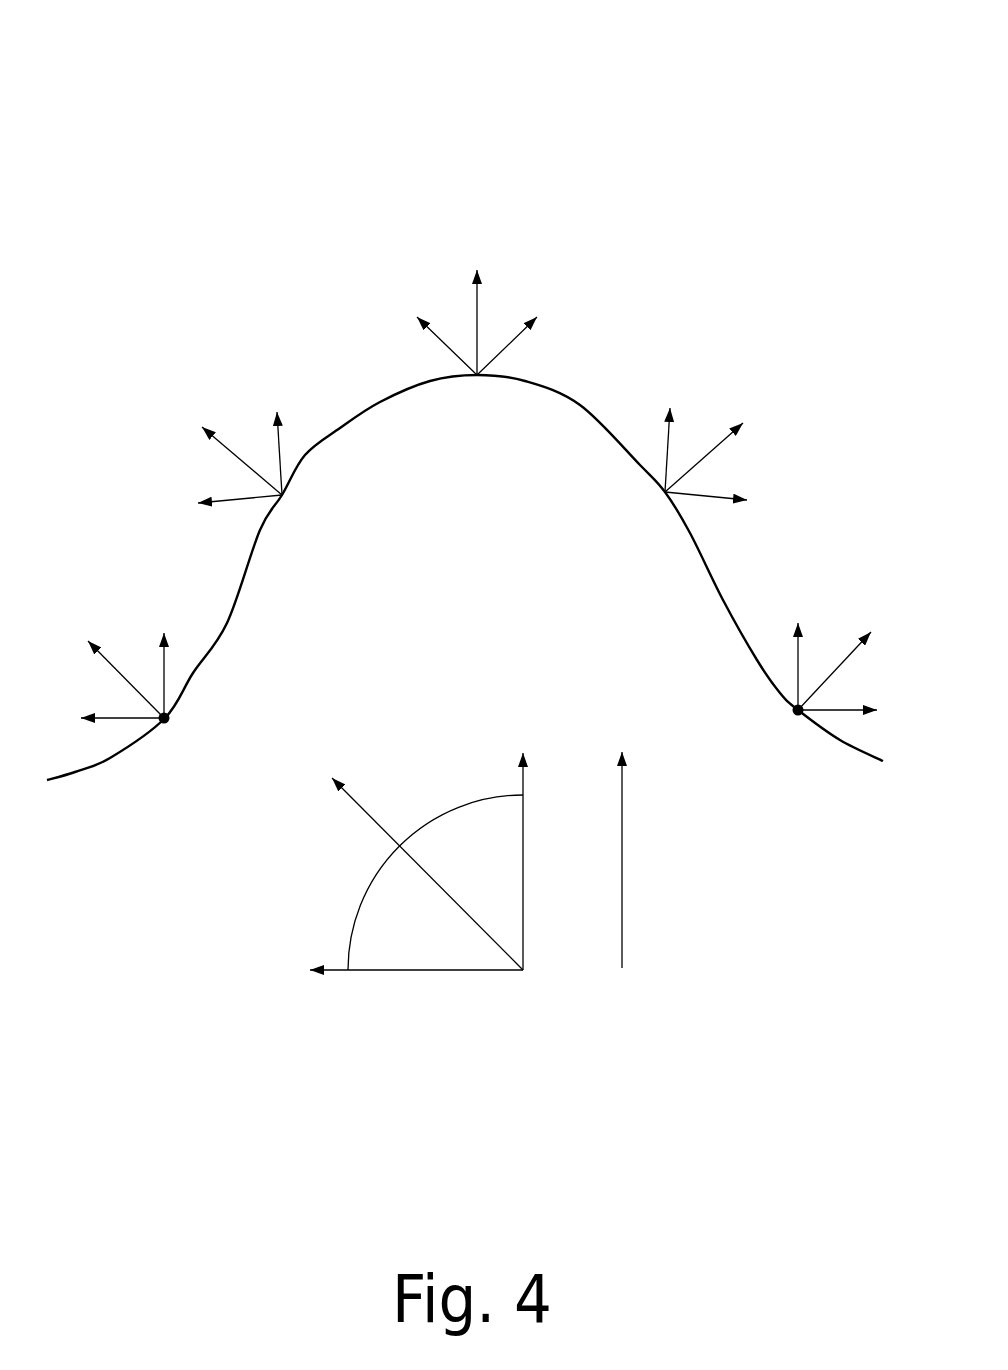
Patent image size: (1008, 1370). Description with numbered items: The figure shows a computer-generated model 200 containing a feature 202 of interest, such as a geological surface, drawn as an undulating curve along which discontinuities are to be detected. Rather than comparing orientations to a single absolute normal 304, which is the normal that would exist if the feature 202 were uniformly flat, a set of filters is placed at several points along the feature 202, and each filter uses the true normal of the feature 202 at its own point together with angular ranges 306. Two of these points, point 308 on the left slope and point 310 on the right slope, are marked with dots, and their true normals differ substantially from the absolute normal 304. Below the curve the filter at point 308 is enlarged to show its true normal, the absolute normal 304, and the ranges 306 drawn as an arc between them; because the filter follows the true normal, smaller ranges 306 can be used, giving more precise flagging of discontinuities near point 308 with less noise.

The computer-generated model 200 is at (220, 62).
The feature 202 is at (570, 407).
The absolute normal 304 is at (638, 967).
The ranges 306 is at (407, 815).
The point 308 is at (167, 723).
The point 310 is at (795, 716).